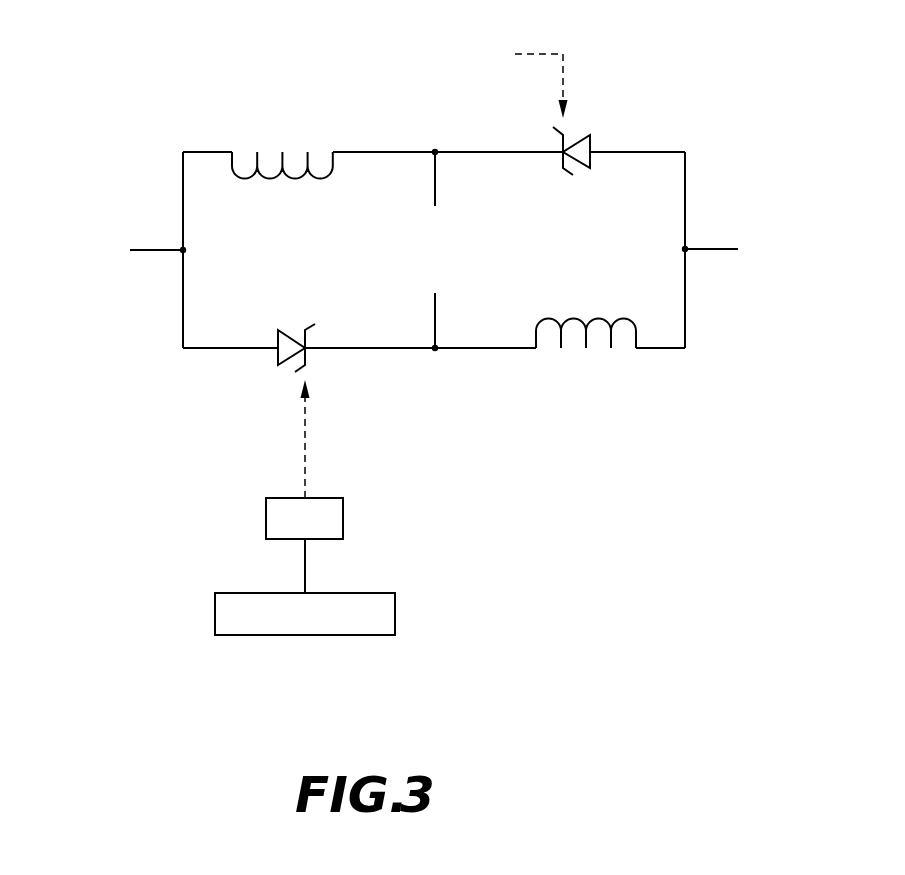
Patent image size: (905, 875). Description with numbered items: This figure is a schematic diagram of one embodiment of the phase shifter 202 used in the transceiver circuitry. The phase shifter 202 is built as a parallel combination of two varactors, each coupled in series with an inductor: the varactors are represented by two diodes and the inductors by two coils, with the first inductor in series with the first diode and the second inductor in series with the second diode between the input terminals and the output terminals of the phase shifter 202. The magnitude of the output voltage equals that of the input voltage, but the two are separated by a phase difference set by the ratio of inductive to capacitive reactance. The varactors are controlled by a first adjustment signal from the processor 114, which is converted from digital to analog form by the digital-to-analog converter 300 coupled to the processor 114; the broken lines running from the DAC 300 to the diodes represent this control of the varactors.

The phase shifter 202 is at (680, 104).
The digital-to-analog converter (DAC) 300 is at (343, 523).
The processor 114 is at (395, 613).